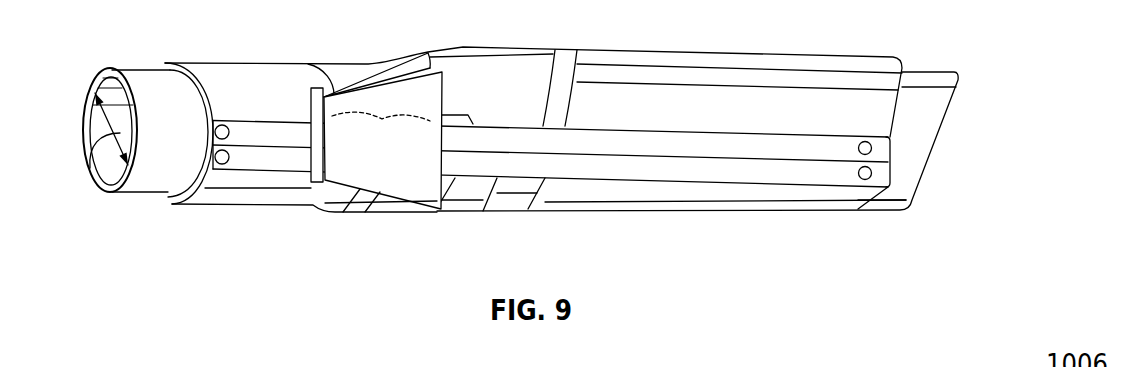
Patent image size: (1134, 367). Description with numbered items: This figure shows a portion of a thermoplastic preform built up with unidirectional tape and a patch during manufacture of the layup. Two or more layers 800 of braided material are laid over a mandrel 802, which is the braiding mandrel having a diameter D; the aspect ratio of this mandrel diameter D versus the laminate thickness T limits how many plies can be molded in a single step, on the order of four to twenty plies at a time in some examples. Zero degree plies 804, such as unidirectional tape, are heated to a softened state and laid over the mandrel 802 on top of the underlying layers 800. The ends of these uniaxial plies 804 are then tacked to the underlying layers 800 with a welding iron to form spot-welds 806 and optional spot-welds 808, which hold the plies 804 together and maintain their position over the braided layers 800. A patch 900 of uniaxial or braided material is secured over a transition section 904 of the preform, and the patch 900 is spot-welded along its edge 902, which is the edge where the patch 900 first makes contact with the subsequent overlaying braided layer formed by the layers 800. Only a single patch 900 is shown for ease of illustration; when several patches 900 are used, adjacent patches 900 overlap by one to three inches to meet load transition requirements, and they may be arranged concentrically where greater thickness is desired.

The layers of braided material 800 is at (730, 103).
The mandrel 802 is at (183, 113).
The zero degree plies 804 is at (708, 174).
The spot-welds 806 is at (229, 157).
The optional spot-welds 808 is at (860, 176).
The patch 900 is at (400, 171).
The edge 902 is at (323, 104).
The transition section 904 is at (380, 118).
The braiding mandrel diameter D is at (90, 171).
The laminate thickness T is at (172, 200).